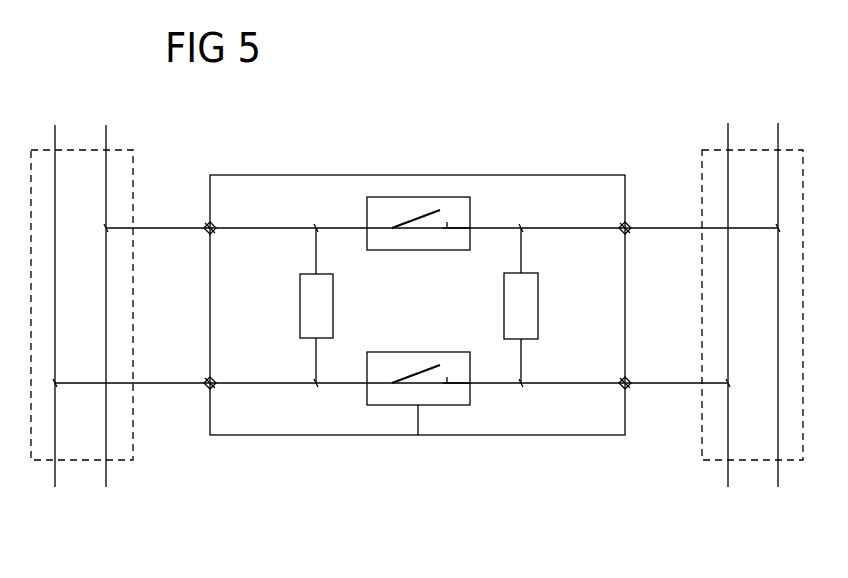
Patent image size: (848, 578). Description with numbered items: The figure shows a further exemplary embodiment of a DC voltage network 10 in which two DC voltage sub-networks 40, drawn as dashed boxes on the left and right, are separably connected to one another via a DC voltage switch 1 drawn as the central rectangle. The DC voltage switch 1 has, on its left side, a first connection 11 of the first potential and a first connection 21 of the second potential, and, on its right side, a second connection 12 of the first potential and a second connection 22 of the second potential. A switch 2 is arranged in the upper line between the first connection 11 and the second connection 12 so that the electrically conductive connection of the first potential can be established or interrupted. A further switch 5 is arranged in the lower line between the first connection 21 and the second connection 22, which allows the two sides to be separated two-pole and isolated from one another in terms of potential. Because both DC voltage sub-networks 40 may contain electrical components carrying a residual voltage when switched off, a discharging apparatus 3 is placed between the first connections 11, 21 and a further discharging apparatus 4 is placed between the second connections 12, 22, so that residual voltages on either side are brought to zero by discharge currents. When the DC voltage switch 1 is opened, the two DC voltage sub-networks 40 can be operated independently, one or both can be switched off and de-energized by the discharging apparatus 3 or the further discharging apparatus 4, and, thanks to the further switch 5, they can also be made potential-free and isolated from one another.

The DC voltage network 10 is at (606, 94).
The DC voltage switch 1 is at (540, 175).
The switch 2 is at (418, 197).
The further switch 5 is at (418, 435).
The discharging apparatus 3 is at (300, 311).
The further discharging apparatus 4 is at (538, 308).
The first connection of the first potential 11 is at (207, 231).
The second connection of the first potential 12 is at (628, 232).
The first connection of the second potential 21 is at (207, 380).
The second connection of the second potential 22 is at (629, 380).
The DC voltage sub-network 40 is at (78, 460).